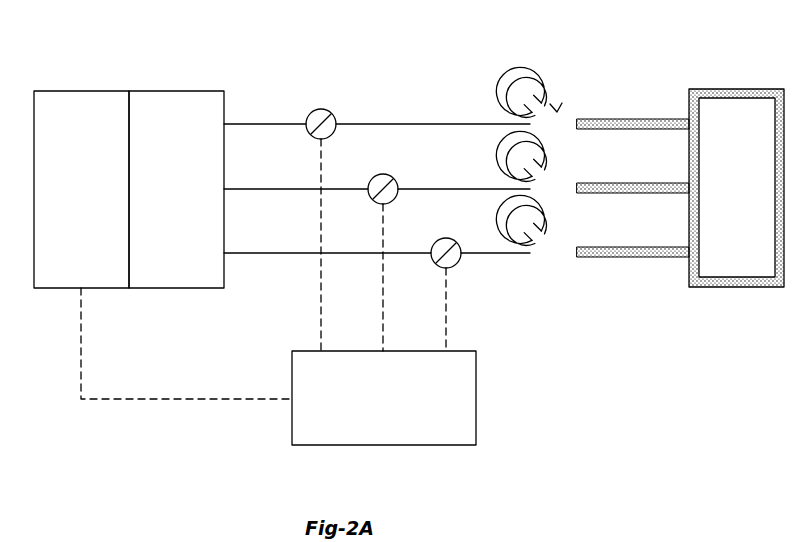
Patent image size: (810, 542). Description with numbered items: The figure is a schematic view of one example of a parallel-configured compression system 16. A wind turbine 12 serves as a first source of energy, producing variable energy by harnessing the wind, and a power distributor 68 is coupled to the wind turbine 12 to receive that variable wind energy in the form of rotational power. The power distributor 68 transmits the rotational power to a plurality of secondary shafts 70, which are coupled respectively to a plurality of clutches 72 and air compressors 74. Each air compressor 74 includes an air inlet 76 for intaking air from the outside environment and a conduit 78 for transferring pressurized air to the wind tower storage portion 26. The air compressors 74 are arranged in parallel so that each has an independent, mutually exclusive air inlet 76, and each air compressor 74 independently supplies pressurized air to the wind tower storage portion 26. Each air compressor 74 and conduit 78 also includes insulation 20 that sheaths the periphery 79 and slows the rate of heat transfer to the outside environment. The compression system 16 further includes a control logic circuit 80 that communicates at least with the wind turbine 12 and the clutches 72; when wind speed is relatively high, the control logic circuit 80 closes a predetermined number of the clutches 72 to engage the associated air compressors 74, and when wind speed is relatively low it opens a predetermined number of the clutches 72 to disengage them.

The wind turbine 12 is at (92, 203).
The power distributor 68 is at (185, 203).
The secondary shafts 70 is at (273, 189).
The clutches 72 is at (327, 109).
The air compressors 74 is at (532, 142).
The air inlet 76 is at (529, 101).
The periphery 79 is at (556, 106).
The conduit 78 is at (637, 183).
The insulation 20 is at (620, 258).
The wind tower storage portion 26 is at (745, 203).
The control logic circuit 80 is at (390, 412).
The compression system 16 is at (236, 333).